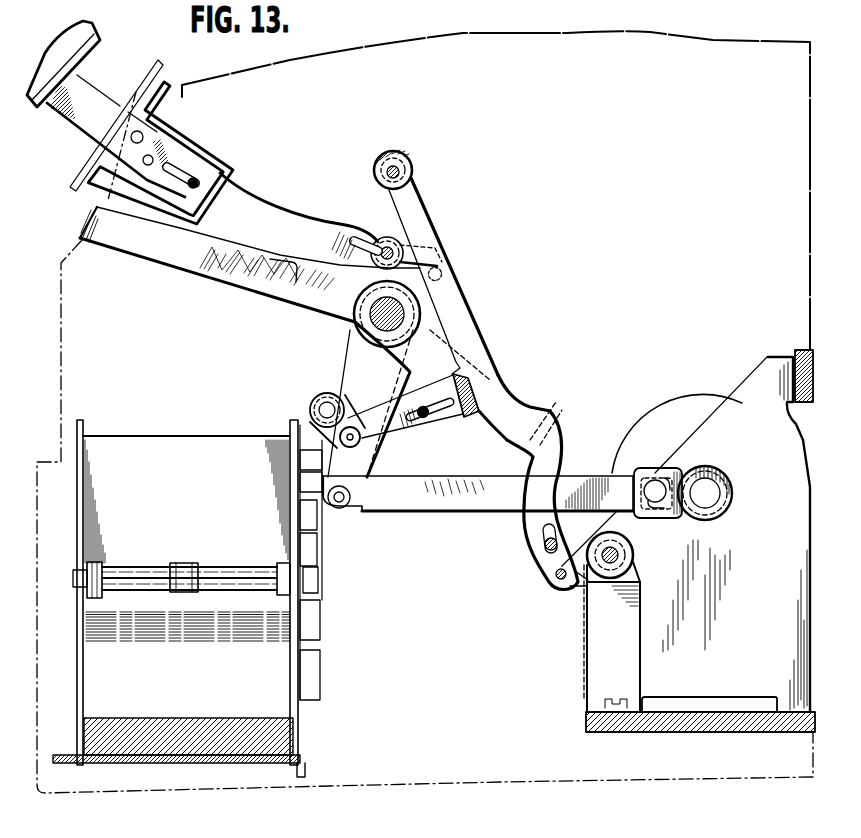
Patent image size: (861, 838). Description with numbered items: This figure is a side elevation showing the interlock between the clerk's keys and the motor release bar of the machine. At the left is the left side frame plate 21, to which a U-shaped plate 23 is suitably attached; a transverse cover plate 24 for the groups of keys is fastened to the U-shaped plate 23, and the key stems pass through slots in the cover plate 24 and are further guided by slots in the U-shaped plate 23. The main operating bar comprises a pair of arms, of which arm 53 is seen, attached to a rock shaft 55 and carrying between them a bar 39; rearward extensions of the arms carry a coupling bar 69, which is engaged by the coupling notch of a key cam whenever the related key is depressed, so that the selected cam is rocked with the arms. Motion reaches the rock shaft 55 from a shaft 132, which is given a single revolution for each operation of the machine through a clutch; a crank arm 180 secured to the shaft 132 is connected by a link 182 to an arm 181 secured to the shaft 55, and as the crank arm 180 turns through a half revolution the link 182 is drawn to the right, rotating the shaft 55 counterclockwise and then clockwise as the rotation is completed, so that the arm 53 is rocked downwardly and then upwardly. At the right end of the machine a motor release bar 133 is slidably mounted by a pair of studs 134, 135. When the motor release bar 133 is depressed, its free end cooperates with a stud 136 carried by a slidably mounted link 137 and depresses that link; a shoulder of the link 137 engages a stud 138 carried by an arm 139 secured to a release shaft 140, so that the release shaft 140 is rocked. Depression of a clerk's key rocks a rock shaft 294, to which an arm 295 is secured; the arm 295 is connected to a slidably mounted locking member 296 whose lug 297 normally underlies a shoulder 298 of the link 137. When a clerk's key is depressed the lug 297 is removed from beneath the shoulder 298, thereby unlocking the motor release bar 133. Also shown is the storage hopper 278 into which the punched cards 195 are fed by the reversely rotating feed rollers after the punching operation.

The left side frame plate 21 is at (63, 347).
The U-shaped plate 23 is at (187, 138).
The transverse cover plate 24 is at (88, 158).
The bar 39 is at (280, 287).
The arm 53 is at (200, 262).
The rock shaft 55 is at (367, 313).
The coupling bar 69 is at (552, 418).
The shaft 132 is at (705, 493).
The motor release bar 133 is at (80, 53).
The stud 134 is at (197, 178).
The stud 135 is at (383, 242).
The stud 136 is at (443, 268).
The link 137 is at (457, 300).
The stud 138 is at (557, 578).
The arm 139 is at (580, 589).
The release shaft 140 is at (617, 557).
The crank arm 180 is at (690, 520).
The arm 181 is at (362, 357).
The link 182 is at (433, 495).
The cards 195 is at (173, 737).
The storage hopper 278 is at (197, 592).
The rock shaft 294 is at (325, 408).
The arm 295 is at (348, 418).
The locking member 296 is at (385, 427).
The lug 297 is at (485, 396).
The shoulder 298 is at (462, 378).